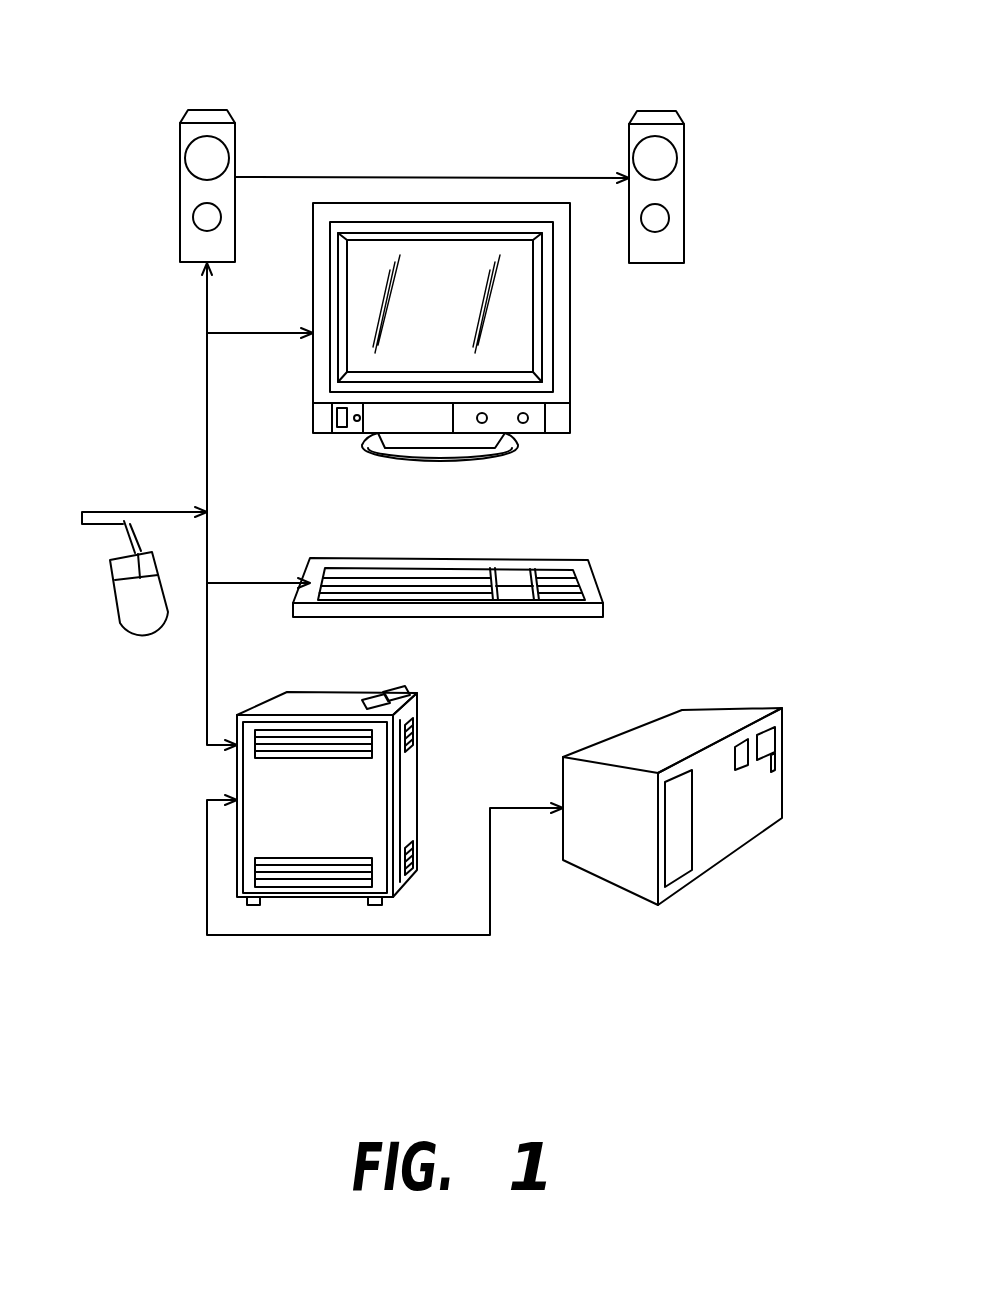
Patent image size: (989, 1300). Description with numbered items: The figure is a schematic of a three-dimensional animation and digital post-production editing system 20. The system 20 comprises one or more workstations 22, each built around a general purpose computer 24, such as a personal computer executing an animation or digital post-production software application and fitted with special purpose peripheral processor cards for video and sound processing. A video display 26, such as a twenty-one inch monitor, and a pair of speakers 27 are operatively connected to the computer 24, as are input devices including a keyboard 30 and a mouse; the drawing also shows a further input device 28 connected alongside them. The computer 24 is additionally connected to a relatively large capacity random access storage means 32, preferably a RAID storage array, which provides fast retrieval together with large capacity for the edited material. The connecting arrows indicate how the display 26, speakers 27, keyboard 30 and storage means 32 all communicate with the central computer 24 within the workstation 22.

The editing system 20 is at (255, 56).
The workstation 22 is at (766, 431).
The general purpose computer 24 is at (395, 697).
The video display 26 is at (571, 403).
The speakers 27 is at (187, 262).
The keyboard 28 is at (595, 568).
The keyboard 30 is at (120, 625).
The random access storage means 32 is at (747, 708).